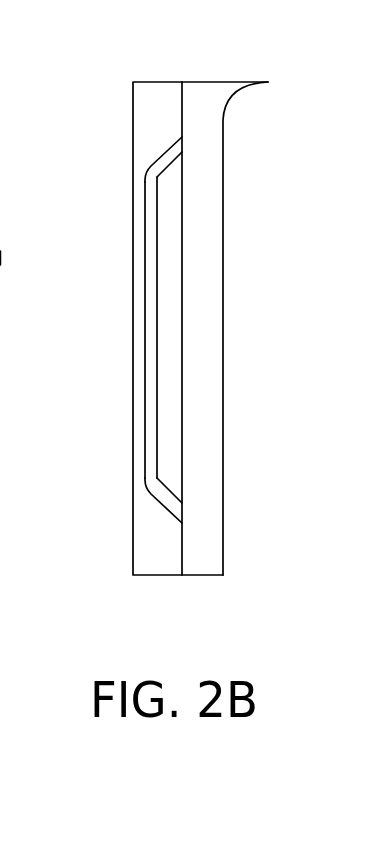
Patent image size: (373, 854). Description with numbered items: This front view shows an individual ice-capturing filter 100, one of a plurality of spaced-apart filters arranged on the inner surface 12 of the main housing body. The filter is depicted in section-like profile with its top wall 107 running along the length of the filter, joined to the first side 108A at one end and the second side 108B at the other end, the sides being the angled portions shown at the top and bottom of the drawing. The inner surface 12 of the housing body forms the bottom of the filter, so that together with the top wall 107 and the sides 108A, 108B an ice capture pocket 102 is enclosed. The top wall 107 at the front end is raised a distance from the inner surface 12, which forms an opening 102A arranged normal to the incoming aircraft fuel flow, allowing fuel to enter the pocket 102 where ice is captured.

The ice-capturing filter 100 is at (92, 58).
The inner surface 12 is at (182, 222).
The ice capture pocket 102 is at (170, 315).
The opening 102A is at (170, 402).
The top wall 107 is at (146, 287).
The first side 108A is at (160, 157).
The second side 108B is at (163, 505).